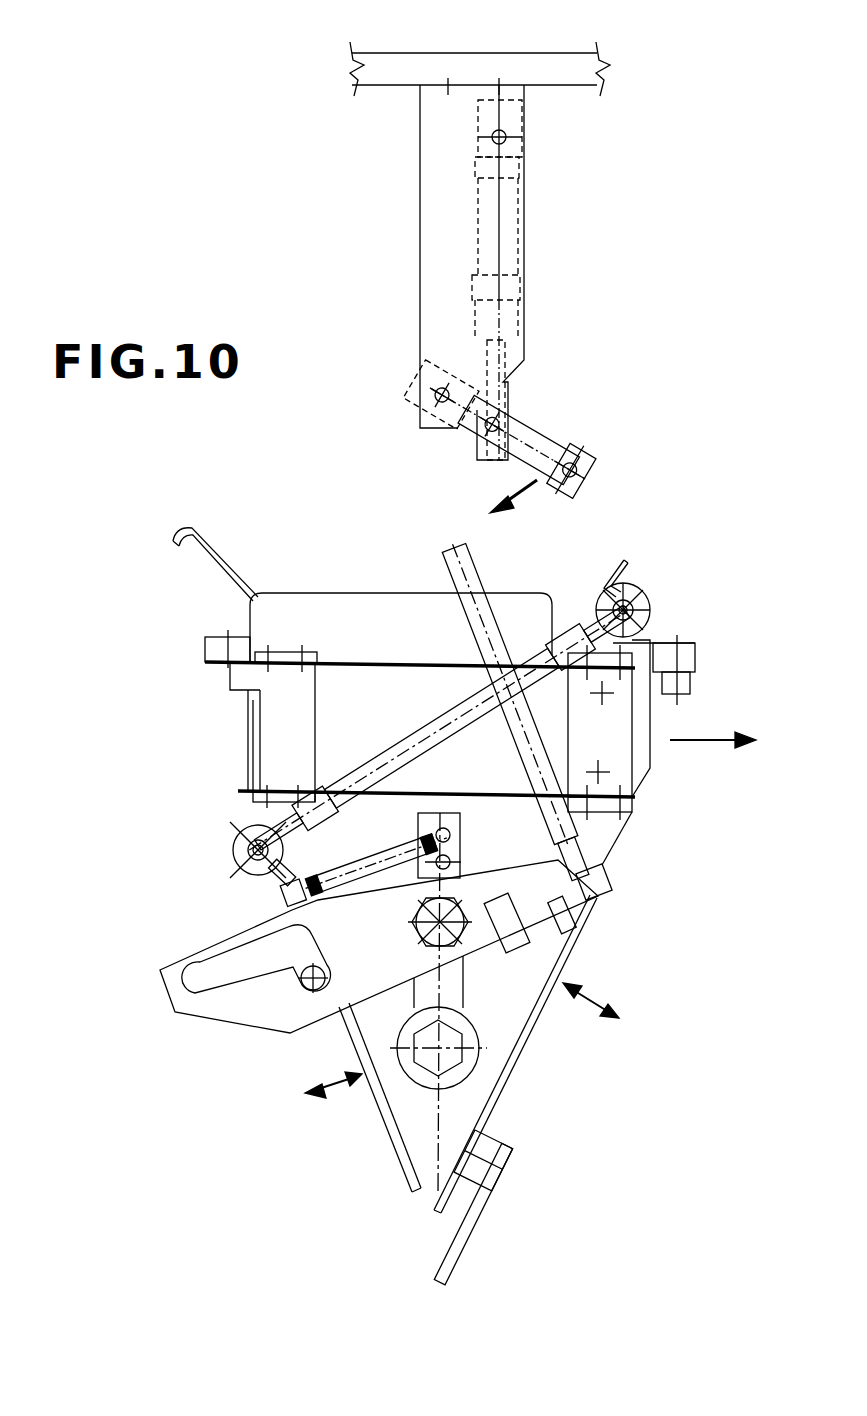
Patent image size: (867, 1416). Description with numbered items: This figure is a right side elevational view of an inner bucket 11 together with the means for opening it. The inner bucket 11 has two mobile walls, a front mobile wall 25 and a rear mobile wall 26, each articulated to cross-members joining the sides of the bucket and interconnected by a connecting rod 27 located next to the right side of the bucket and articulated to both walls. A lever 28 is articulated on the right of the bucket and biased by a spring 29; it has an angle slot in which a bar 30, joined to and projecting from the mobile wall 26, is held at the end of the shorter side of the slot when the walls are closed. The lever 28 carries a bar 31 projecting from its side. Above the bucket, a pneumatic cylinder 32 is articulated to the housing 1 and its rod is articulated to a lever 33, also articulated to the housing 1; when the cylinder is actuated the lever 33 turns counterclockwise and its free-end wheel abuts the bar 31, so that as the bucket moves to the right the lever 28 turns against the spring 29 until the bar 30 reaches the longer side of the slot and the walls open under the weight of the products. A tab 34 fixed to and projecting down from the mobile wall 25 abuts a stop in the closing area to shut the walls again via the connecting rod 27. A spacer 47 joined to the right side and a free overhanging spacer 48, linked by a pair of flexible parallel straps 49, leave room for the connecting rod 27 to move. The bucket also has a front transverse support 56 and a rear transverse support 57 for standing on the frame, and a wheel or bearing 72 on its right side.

The housing 1 is at (401, 65).
The pneumatic cylinder 32 is at (507, 228).
The lever 33 is at (537, 438).
The inner bucket 11 is at (299, 607).
The bar 31 is at (437, 550).
The connecting rod 27 is at (542, 657).
The rear transverse support 57 is at (215, 675).
The front transverse support 56 is at (693, 690).
The straps 49 is at (398, 668).
The spacer 48 is at (277, 732).
The spacer 47 is at (620, 758).
The spring 29 is at (365, 865).
The lever 28 is at (180, 983).
The bar 30 is at (307, 988).
The mobile wall 25 is at (518, 1042).
The wheel or bearing 72 is at (467, 1070).
The mobile wall 26 is at (395, 1142).
The tab 34 is at (463, 1247).